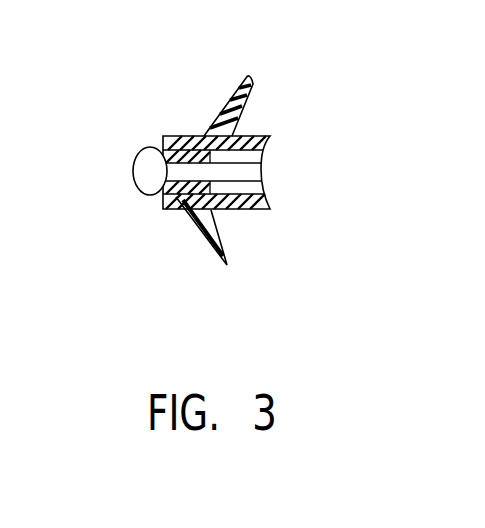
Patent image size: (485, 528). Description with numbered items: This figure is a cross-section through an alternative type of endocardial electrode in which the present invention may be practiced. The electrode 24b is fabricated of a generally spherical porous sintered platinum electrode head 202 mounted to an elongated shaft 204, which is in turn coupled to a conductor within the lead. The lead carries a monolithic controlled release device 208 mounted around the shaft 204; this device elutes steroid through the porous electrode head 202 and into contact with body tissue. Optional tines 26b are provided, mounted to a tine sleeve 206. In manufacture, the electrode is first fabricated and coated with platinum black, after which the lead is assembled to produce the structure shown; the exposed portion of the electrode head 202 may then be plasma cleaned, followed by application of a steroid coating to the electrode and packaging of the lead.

The electrode head 202 is at (136, 171).
The shaft 204 is at (250, 175).
The tine sleeve 206 is at (259, 135).
The monolithic controlled release device 208 is at (185, 193).
The tines 26b is at (247, 80).
The electrode 24b is at (108, 188).